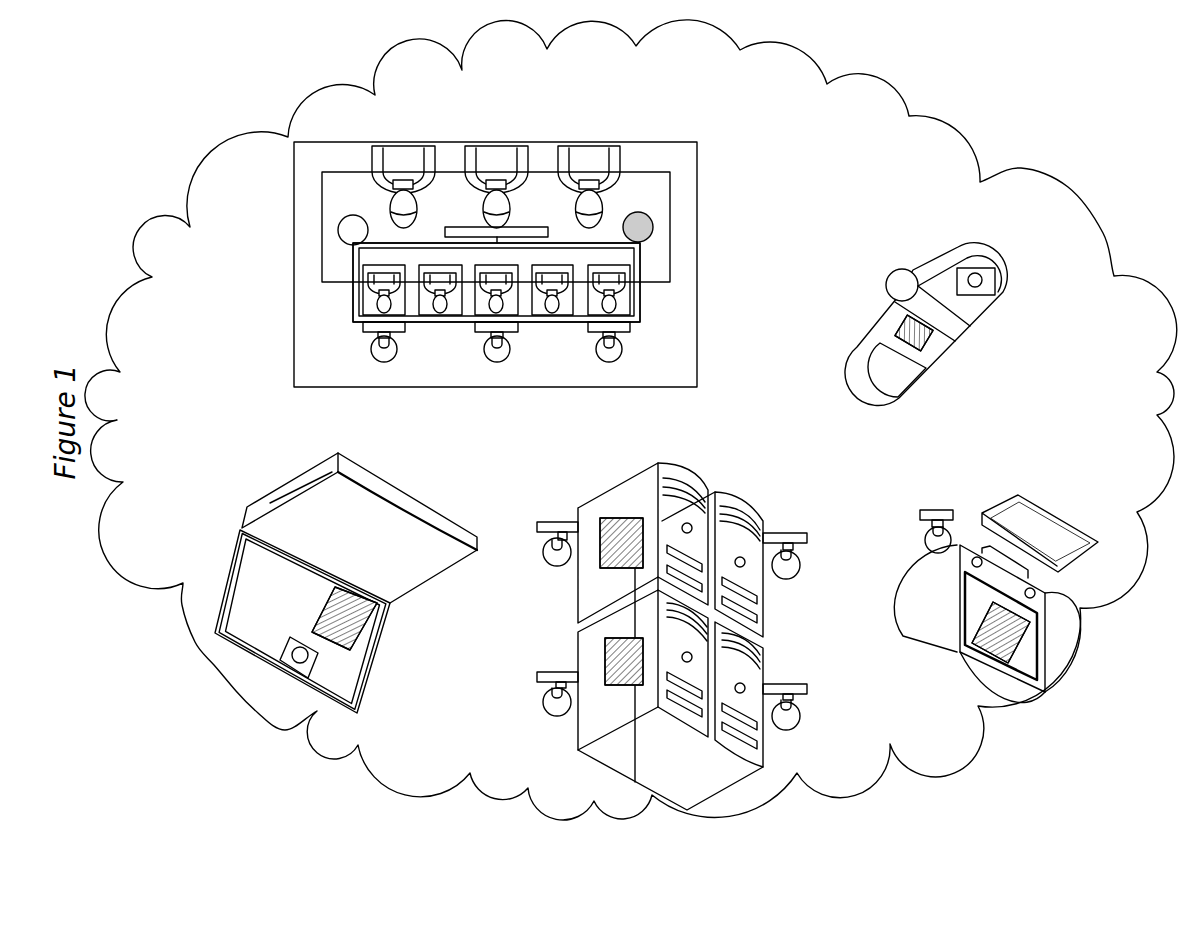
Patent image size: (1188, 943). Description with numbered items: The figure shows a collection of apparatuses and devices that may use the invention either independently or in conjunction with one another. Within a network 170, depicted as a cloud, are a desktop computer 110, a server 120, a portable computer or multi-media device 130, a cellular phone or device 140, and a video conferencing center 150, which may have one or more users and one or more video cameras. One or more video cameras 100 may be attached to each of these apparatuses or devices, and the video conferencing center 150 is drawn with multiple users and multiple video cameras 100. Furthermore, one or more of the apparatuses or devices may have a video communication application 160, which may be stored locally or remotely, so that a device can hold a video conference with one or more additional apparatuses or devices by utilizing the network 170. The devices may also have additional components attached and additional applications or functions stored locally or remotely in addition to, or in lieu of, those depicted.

The video camera 100 is at (399, 352).
The desktop computer 110 is at (957, 664).
The server 120 is at (627, 736).
The portable computer or multi-media device 130 is at (351, 674).
The cellular phone or device 140 is at (895, 397).
The video conferencing center 150 is at (431, 375).
The video communication application 160 is at (355, 254).
The network 170 is at (971, 759).